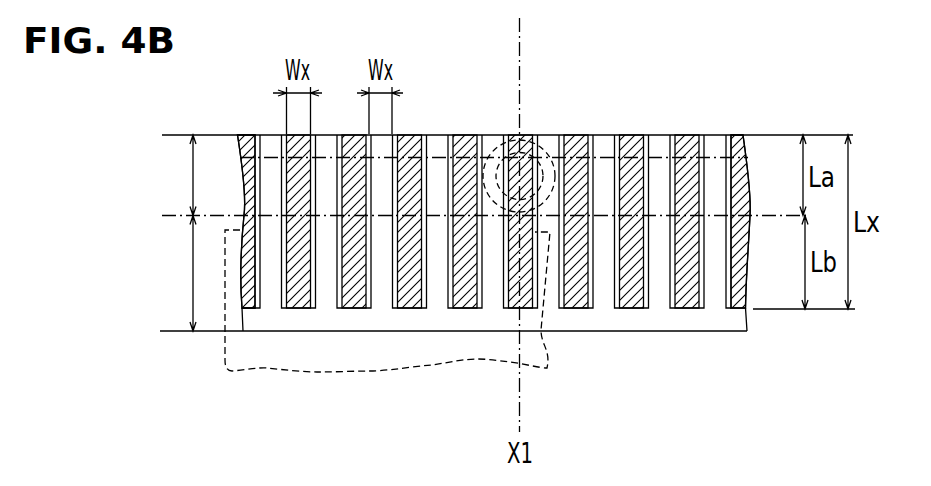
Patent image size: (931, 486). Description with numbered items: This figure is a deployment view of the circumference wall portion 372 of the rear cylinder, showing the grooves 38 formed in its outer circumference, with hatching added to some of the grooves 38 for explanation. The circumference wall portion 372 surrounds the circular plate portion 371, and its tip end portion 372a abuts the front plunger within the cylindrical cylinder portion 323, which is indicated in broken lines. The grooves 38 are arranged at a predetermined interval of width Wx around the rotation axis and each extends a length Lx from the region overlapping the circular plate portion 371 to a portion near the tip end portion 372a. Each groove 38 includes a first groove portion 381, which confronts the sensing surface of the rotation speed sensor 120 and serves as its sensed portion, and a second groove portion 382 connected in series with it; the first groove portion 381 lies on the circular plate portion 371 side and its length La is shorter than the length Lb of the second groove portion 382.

The groove 38 is at (573, 140).
The rotation speed sensor 120 is at (491, 140).
The cylindrical cylinder portion 323 is at (380, 350).
The circular plate portion 371 is at (719, 157).
The circumference wall portion 372 is at (716, 300).
The tip end portion 372a is at (605, 333).
The first groove portion 381 is at (171, 175).
The second groove portion 382 is at (171, 274).